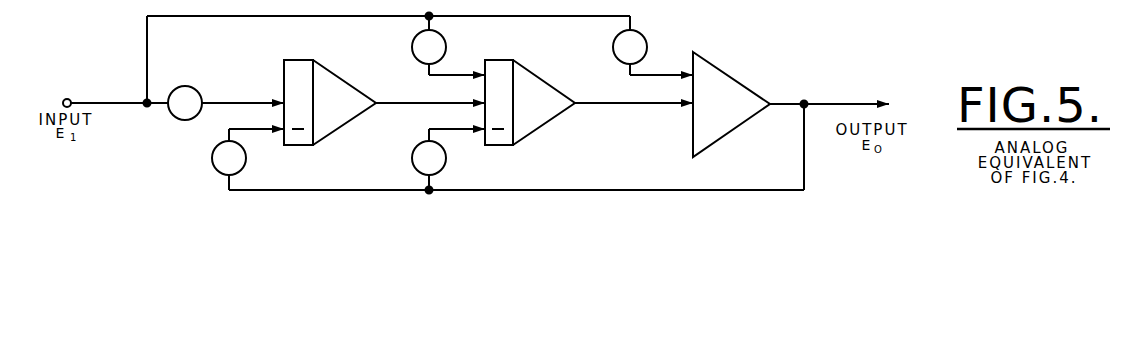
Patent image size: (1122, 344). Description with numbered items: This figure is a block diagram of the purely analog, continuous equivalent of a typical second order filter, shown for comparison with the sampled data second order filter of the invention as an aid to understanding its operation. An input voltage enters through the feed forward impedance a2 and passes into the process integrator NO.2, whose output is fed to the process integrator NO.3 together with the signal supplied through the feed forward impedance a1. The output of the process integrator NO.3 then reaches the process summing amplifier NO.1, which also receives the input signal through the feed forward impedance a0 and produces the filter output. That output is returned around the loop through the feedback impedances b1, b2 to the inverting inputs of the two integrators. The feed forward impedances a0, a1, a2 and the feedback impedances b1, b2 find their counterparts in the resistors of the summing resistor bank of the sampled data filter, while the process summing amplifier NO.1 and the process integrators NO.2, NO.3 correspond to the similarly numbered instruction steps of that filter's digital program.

The process summing amplifier NO.1 is at (731, 104).
The process integrator NO.2 is at (330, 102).
The process integrator NO.3 is at (530, 102).
The feed forward impedance a2 is at (185, 103).
The feedback impedance b2 is at (229, 158).
The feed forward impedance a1 is at (429, 47).
The feedback impedance b1 is at (429, 158).
The feed forward impedance a0 is at (630, 47).